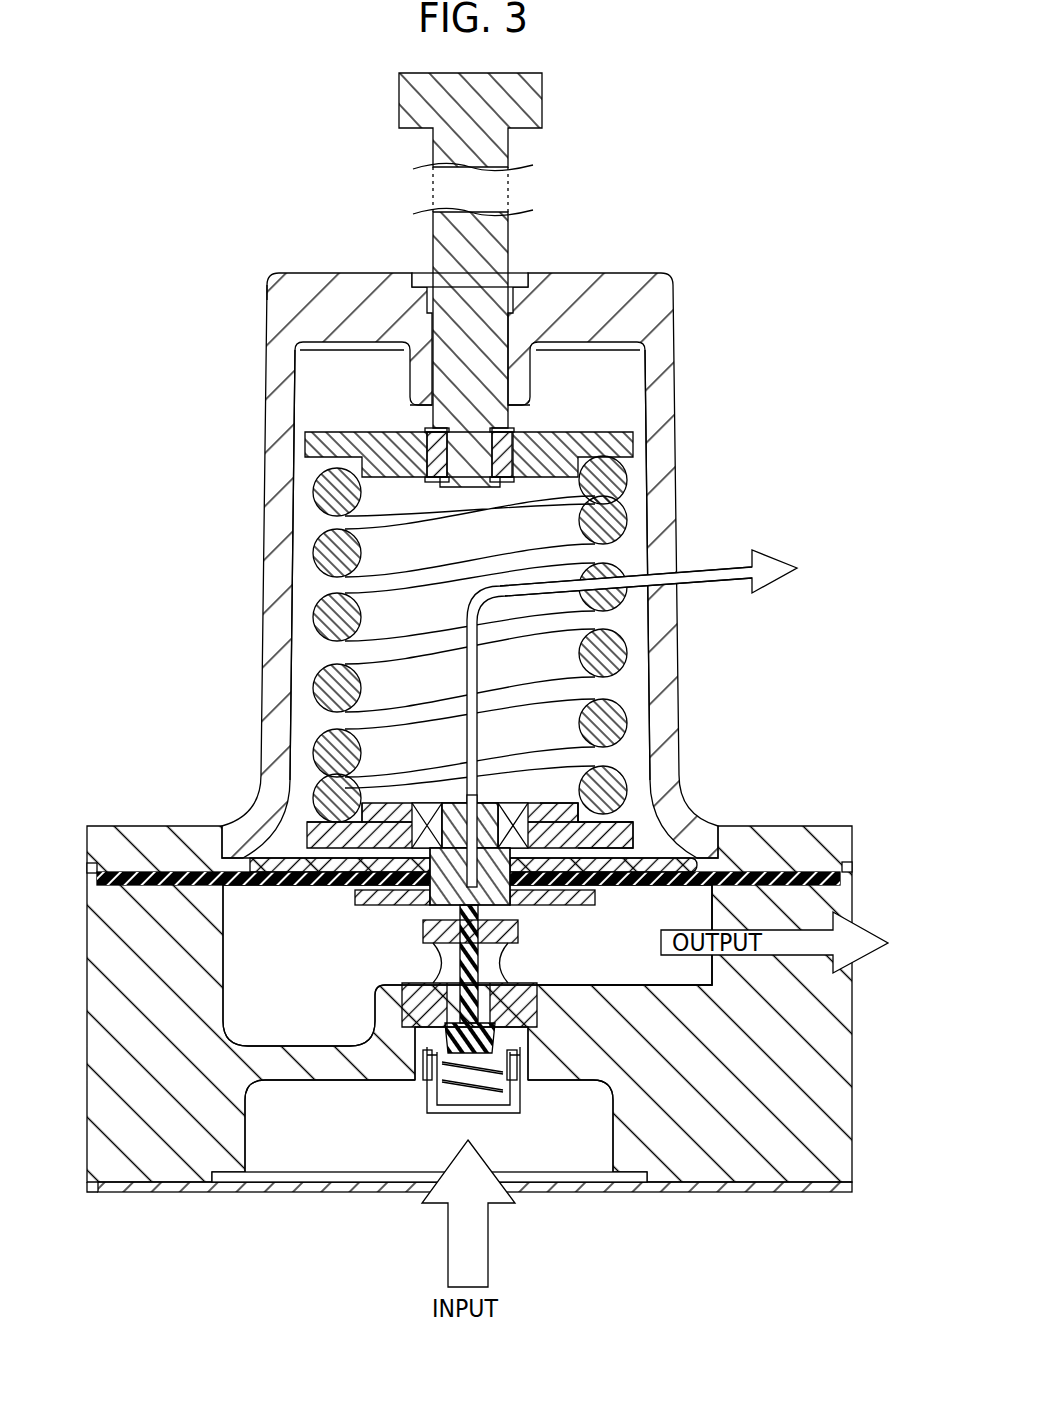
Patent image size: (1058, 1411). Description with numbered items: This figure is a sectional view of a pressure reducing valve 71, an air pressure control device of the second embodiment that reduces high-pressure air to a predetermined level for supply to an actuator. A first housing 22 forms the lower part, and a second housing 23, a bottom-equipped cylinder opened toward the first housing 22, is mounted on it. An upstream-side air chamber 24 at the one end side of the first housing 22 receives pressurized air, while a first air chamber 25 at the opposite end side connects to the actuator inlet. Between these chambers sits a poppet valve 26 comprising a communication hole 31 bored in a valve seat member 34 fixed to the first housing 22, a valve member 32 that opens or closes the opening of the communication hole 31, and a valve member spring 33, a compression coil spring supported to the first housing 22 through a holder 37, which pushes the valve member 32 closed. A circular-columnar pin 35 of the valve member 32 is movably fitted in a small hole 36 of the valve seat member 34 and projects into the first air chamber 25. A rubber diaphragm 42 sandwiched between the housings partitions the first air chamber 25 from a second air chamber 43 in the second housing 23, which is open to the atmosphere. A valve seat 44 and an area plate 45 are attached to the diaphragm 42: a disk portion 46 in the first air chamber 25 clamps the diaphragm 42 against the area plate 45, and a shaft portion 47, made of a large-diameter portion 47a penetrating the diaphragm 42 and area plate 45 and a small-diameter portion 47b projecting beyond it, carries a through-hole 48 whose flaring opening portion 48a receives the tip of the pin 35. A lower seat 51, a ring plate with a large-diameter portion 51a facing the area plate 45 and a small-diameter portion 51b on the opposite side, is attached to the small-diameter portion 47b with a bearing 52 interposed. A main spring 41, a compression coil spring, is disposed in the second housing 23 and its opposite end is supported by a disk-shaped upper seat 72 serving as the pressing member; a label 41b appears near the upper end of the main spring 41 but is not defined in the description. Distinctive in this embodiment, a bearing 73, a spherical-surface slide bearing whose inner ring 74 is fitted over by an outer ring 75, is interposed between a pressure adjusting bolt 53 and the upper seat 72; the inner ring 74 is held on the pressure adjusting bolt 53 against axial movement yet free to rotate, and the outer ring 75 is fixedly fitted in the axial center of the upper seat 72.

The pressure reducing valve 71 is at (161, 171).
The pressure adjusting bolt 53 is at (432, 247).
The second housing 23 is at (267, 330).
The bearing 73 is at (413, 428).
The inner ring 74 is at (507, 430).
The outer ring 75 is at (518, 434).
The upper seat 72 is at (308, 441).
The upper end of pressure setting spring 41b is at (605, 452).
The second air chamber 43 is at (310, 525).
The main spring 41 is at (483, 605).
The bearing 52 is at (427, 802).
The through-hole 48 is at (495, 800).
The lower seat 51 is at (683, 770).
The large-diameter portion 51a is at (623, 830).
The small-diameter portion 51b is at (578, 807).
The area plate 45 is at (655, 858).
The valve seat 44 is at (366, 773).
The shaft portion 47 is at (387, 773).
The large-diameter portion 47a is at (447, 826).
The small-diameter portion 47b is at (387, 806).
The disk portion 46 is at (330, 833).
The diaphragm 42 is at (254, 887).
The opening portion 48a is at (480, 907).
The small hole 36 is at (455, 958).
The pin 35 is at (445, 976).
The communication hole 31 is at (450, 1003).
The first air chamber 25 is at (260, 984).
The first housing 22 is at (86, 1084).
The valve member 32 is at (440, 1037).
The valve member spring 33 is at (522, 1088).
The holder 37 is at (520, 1104).
The upstream-side air chamber 24 is at (277, 1142).
The poppet valve 26 is at (418, 1097).
The valve seat member 34 is at (550, 1006).